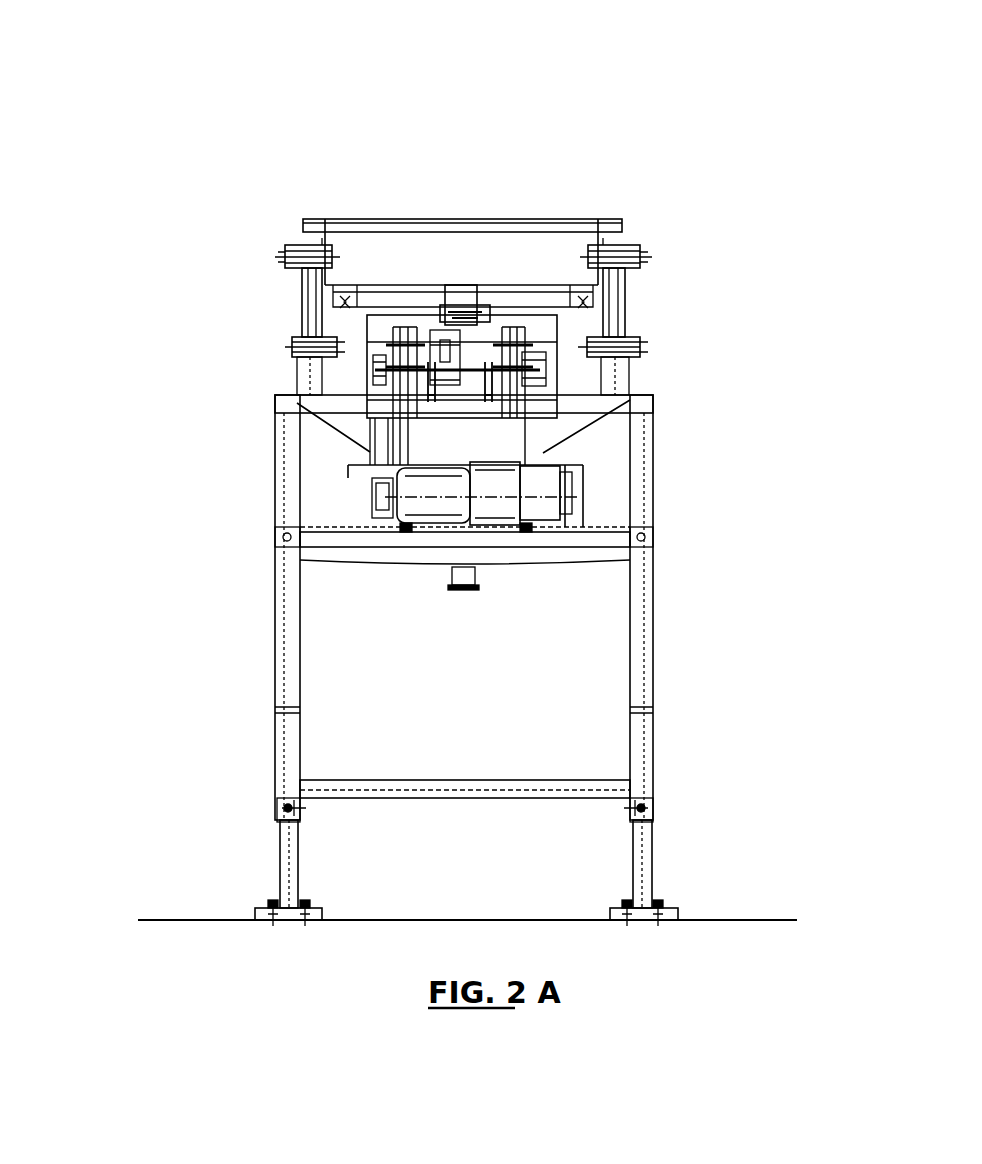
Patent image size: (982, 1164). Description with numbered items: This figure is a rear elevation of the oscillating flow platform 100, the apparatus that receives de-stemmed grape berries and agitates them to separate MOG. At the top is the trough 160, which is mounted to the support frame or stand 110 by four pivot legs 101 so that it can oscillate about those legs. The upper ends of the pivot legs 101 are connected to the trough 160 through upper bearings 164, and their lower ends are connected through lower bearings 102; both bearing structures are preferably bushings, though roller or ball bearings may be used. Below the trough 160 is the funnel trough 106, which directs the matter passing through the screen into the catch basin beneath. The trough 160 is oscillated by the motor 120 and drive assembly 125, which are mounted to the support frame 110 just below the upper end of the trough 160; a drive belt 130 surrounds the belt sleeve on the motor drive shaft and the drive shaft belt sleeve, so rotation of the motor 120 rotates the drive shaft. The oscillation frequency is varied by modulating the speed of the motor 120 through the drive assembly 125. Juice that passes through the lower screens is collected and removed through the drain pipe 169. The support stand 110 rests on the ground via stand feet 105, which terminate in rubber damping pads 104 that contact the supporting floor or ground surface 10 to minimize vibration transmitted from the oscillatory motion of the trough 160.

The oscillating flow platform 100 is at (730, 162).
The supporting floor or ground surface 10 is at (437, 917).
The support frame or stand 110 is at (663, 636).
The stand feet 105 is at (258, 870).
The rubber damping pads 104 is at (252, 907).
The drain pipe 169 is at (447, 588).
The trough 160 is at (482, 276).
The pivot legs 101 is at (293, 305).
The upper bearings 164 is at (277, 248).
The lower bearings 102 is at (283, 358).
The funnel trough 106 is at (477, 448).
The drive assembly 125 is at (357, 372).
The drive belt 130 is at (370, 453).
The motor 120 is at (550, 490).